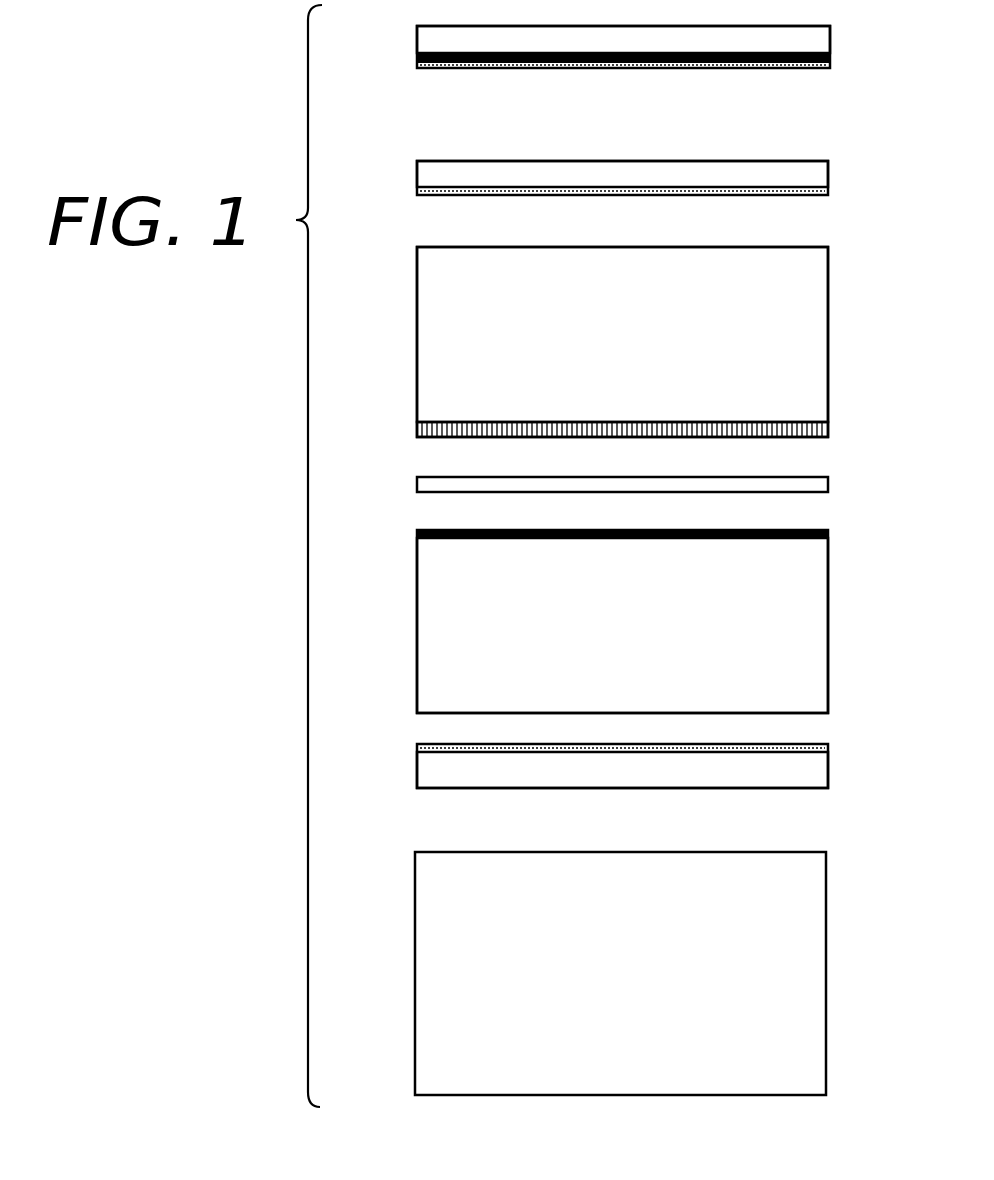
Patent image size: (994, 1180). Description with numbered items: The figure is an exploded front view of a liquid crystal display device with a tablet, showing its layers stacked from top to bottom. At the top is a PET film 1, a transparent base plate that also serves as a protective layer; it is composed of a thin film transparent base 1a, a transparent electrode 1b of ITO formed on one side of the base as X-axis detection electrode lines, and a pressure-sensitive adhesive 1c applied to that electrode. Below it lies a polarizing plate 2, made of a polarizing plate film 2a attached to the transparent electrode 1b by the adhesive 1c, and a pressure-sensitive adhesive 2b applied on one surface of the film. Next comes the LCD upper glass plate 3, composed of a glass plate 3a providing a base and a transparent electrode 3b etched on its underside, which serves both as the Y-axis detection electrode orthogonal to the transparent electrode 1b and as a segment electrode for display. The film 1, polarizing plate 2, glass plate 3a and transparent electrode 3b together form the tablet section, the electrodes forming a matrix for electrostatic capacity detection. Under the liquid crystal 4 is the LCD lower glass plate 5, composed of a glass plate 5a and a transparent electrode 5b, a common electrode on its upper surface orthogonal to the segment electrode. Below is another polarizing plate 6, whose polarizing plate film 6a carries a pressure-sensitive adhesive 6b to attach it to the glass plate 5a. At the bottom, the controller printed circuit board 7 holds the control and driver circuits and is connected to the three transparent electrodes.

The PET film 1 is at (415, 52).
The thin film transparent base 1a is at (830, 44).
The transparent electrode 1b is at (830, 58).
The pressure-sensitive adhesive 1c is at (818, 69).
The polarizing plate 2 is at (415, 182).
The polarizing plate film 2a is at (828, 172).
The pressure-sensitive adhesive 2b is at (816, 196).
The LCD upper glass plate 3 is at (415, 305).
The glass plate 3a is at (828, 277).
The transparent electrode 3b is at (828, 430).
The liquid crystal 4 is at (828, 484).
The LCD lower glass plate 5 is at (415, 590).
The glass plate 5a is at (828, 600).
The transparent electrode 5b is at (828, 535).
The polarizing plate 6 is at (415, 770).
The polarizing plate film 6a is at (828, 779).
The pressure-sensitive adhesive 6b is at (828, 750).
The controller printed circuit board 7 is at (827, 893).